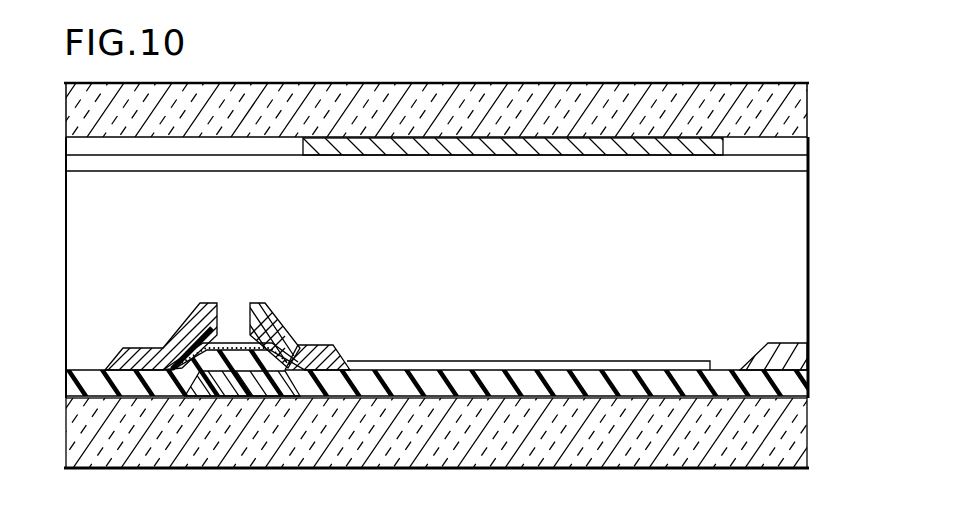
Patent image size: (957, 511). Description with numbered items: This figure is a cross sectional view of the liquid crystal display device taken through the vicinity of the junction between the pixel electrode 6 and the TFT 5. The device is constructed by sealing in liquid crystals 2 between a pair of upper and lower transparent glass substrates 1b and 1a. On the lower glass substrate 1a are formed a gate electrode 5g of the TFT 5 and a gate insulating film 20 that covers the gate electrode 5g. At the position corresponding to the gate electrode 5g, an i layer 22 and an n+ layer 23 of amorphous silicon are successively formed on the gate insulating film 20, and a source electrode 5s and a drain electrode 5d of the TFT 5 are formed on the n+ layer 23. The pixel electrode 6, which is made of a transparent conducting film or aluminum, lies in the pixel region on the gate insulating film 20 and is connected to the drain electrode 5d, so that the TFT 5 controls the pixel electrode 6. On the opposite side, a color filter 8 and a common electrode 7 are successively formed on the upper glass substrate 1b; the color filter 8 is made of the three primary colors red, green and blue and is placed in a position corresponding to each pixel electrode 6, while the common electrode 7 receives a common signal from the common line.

The lower transparent glass substrate 1a is at (800, 408).
The upper transparent glass substrate 1b is at (798, 101).
The liquid crystals 2 is at (785, 230).
The TFT 5 is at (231, 305).
The source electrode 5s is at (117, 357).
The drain electrode 5d is at (322, 345).
The gate electrode 5g is at (233, 397).
The pixel electrode 6 is at (563, 368).
The common electrode 7 is at (792, 161).
The color filter 8 is at (793, 142).
The gate insulating film 20 is at (790, 382).
The i layer 22 is at (195, 318).
The n+ layer 23 is at (282, 320).